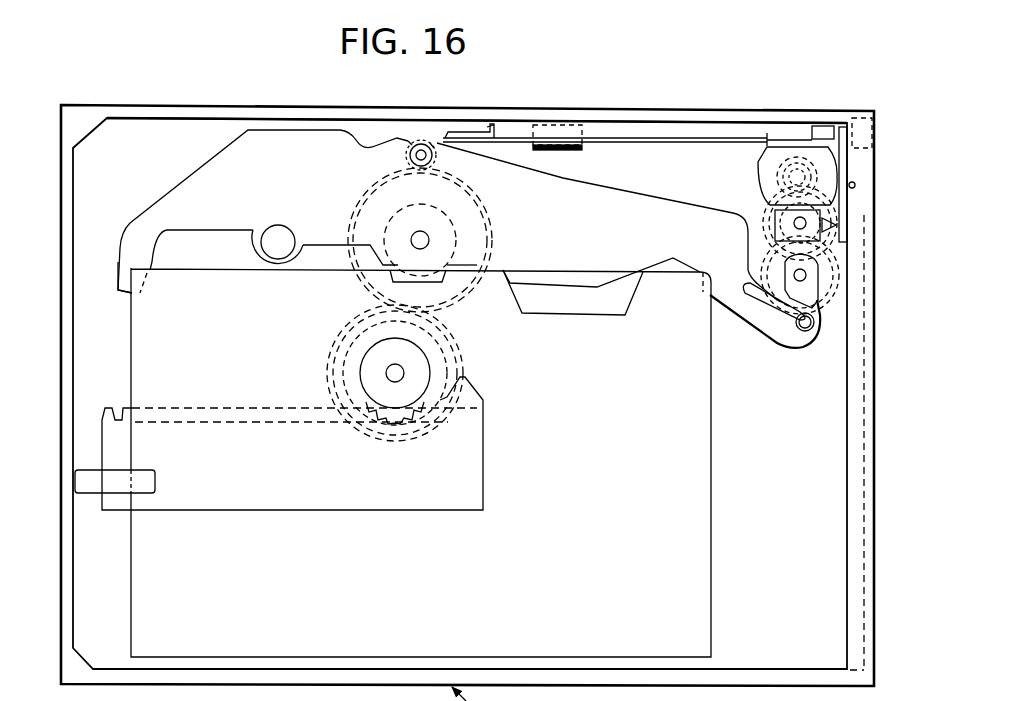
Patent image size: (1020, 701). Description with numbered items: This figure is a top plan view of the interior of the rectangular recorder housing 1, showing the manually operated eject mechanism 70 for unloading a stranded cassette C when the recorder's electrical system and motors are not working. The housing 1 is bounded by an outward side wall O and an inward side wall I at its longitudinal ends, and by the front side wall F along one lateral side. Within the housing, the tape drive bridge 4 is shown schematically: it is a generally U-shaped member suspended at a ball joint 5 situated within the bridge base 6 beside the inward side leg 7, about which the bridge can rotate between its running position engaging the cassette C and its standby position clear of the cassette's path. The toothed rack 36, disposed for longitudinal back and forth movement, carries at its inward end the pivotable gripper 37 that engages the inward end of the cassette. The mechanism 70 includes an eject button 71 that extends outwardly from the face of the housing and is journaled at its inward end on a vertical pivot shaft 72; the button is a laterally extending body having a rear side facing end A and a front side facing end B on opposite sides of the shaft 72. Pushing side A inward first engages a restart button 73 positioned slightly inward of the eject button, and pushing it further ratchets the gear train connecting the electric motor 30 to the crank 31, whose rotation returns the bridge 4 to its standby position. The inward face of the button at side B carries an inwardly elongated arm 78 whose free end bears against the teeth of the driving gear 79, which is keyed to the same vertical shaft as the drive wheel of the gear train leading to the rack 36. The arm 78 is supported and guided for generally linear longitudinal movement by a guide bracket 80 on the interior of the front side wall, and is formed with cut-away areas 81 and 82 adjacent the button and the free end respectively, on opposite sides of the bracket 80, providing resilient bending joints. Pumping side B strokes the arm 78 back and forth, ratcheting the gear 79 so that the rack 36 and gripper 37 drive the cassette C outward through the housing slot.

The recorder housing 1 is at (162, 106).
The tape drive bridge 4 is at (629, 187).
The ball joint 5 is at (281, 234).
The bridge base 6 is at (538, 225).
The inward side leg 7 is at (116, 262).
The electric motor 30 is at (762, 177).
The crank 31 is at (818, 308).
The toothed rack 36 is at (310, 492).
The gripper 37 is at (155, 465).
The manual eject mechanism 70 is at (757, 149).
The eject button 71 is at (885, 250).
The pivot shaft 72 is at (851, 182).
The restart button 73 is at (820, 304).
The elongated arm 78 is at (695, 121).
The driving gear 79 is at (415, 140).
The guide bracket 80 is at (574, 150).
The cut-away area 81 is at (800, 137).
The cut-away area 82 is at (488, 127).
The rear side facing end A is at (884, 113).
The front side facing end B is at (870, 152).
The cassette C is at (612, 444).
The front side wall F is at (650, 104).
The inward side wall I is at (60, 352).
The outward side wall O is at (877, 380).